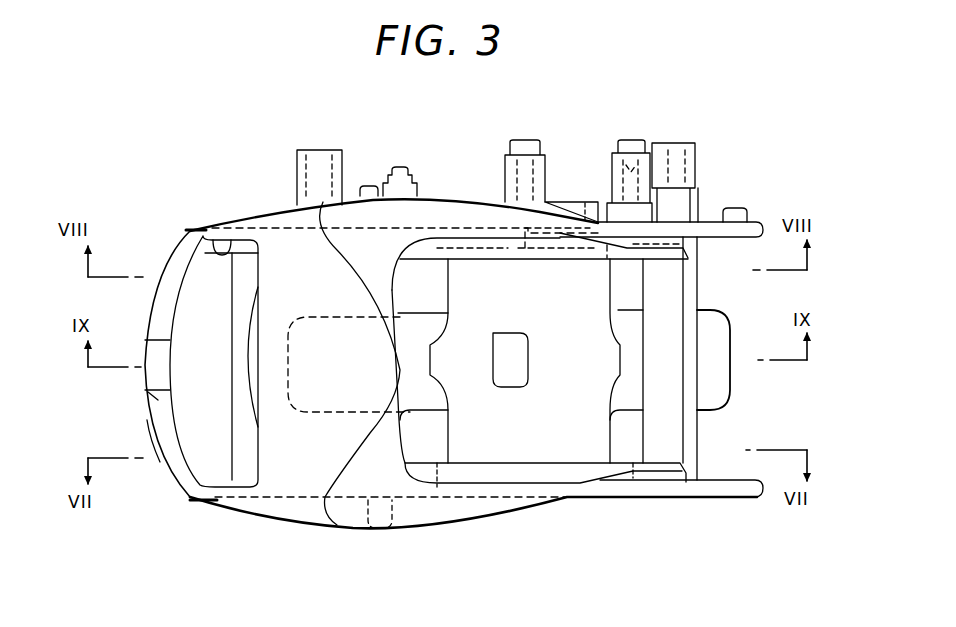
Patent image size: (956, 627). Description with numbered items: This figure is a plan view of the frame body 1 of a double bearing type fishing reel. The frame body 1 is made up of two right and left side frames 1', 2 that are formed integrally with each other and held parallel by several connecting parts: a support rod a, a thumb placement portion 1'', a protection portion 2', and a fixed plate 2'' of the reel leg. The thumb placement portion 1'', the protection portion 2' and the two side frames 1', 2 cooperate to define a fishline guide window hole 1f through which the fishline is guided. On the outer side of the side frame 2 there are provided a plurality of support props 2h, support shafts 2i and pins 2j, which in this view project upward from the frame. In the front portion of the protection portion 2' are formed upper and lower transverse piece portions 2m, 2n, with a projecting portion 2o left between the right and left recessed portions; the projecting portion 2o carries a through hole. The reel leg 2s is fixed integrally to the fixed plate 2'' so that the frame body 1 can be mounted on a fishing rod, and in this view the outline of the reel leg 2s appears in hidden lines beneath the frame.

The frame body 1 is at (443, 320).
The side frame 1' is at (197, 547).
The thumb placement portion 1'' is at (444, 361).
The fishline guide window hole 1f is at (221, 242).
The side frame 2 is at (467, 323).
The protection portion 2' is at (154, 370).
The fixed plate 2'' is at (671, 358).
The support props 2h is at (298, 150).
The support shafts 2i is at (522, 140).
The pins 2j is at (400, 167).
The upper transverse piece portion 2m is at (172, 316).
The lower transverse piece portion 2n is at (150, 428).
The projecting portion 2o is at (147, 402).
The reel leg 2s is at (323, 416).
The support rod a is at (704, 414).